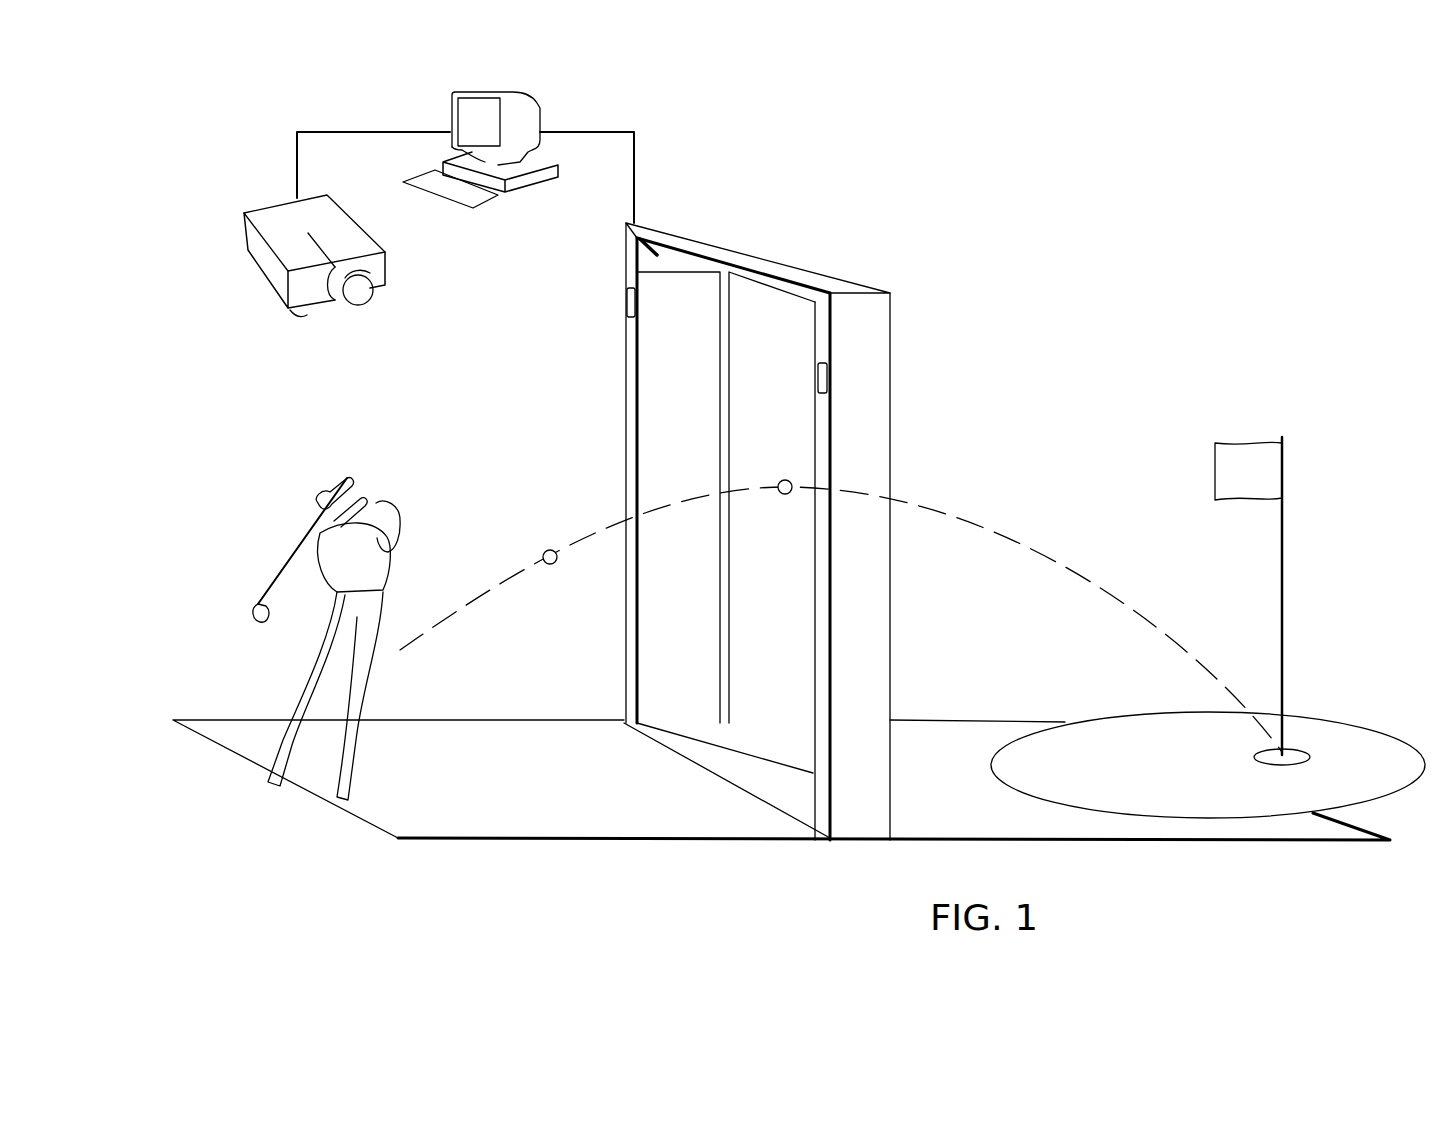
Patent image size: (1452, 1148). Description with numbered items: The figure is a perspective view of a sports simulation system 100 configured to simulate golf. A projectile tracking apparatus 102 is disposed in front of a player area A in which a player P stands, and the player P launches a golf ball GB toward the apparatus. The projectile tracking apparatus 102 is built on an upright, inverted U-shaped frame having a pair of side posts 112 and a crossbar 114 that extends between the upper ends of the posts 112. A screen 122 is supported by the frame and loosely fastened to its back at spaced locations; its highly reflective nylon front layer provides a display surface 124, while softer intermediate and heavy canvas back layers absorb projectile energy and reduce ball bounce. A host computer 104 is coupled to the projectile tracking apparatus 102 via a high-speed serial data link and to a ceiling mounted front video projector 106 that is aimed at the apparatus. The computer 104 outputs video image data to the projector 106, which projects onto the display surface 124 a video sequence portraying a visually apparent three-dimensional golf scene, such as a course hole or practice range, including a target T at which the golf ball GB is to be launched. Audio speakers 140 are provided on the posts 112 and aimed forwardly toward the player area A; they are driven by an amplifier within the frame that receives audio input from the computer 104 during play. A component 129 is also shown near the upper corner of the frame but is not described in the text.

The sports simulation system 100 is at (1058, 263).
The projectile tracking apparatus 102 is at (917, 292).
The host computer 104 is at (518, 205).
The front video projector 106 is at (338, 322).
The side posts 112 is at (653, 332).
The crossbar 114 is at (762, 252).
The screen 122 is at (763, 425).
The display surface 124 is at (790, 566).
The corner sensor 129 is at (665, 263).
The audio speakers 140 is at (624, 295).
The golf ball GB is at (535, 556).
The player P is at (397, 585).
The target T is at (1292, 706).
The player area A is at (530, 795).